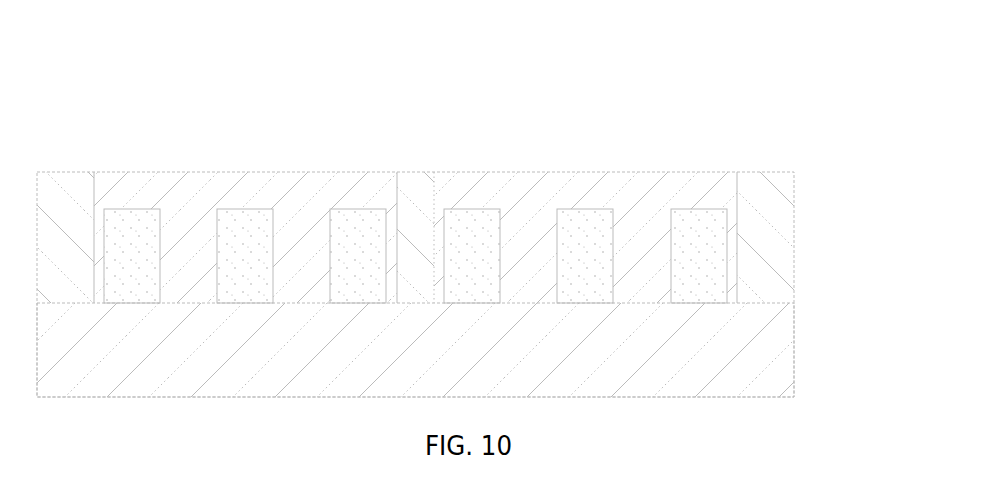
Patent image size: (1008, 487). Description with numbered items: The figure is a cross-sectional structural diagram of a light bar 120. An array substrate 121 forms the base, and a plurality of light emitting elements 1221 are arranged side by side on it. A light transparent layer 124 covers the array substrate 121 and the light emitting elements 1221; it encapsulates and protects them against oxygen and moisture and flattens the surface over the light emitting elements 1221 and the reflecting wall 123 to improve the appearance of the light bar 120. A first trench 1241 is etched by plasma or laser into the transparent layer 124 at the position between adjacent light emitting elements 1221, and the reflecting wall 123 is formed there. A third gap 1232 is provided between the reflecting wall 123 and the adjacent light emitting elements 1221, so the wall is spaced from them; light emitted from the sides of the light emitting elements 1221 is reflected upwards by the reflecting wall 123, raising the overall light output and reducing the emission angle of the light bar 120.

The light bar 120 is at (472, 127).
The array substrate 121 is at (776, 373).
The reflecting wall 123 is at (777, 280).
The light transparent layer 124 is at (712, 194).
The light emitting elements 1221 is at (712, 244).
The third gap 1232 is at (97, 223).
The first trench 1241 is at (420, 200).